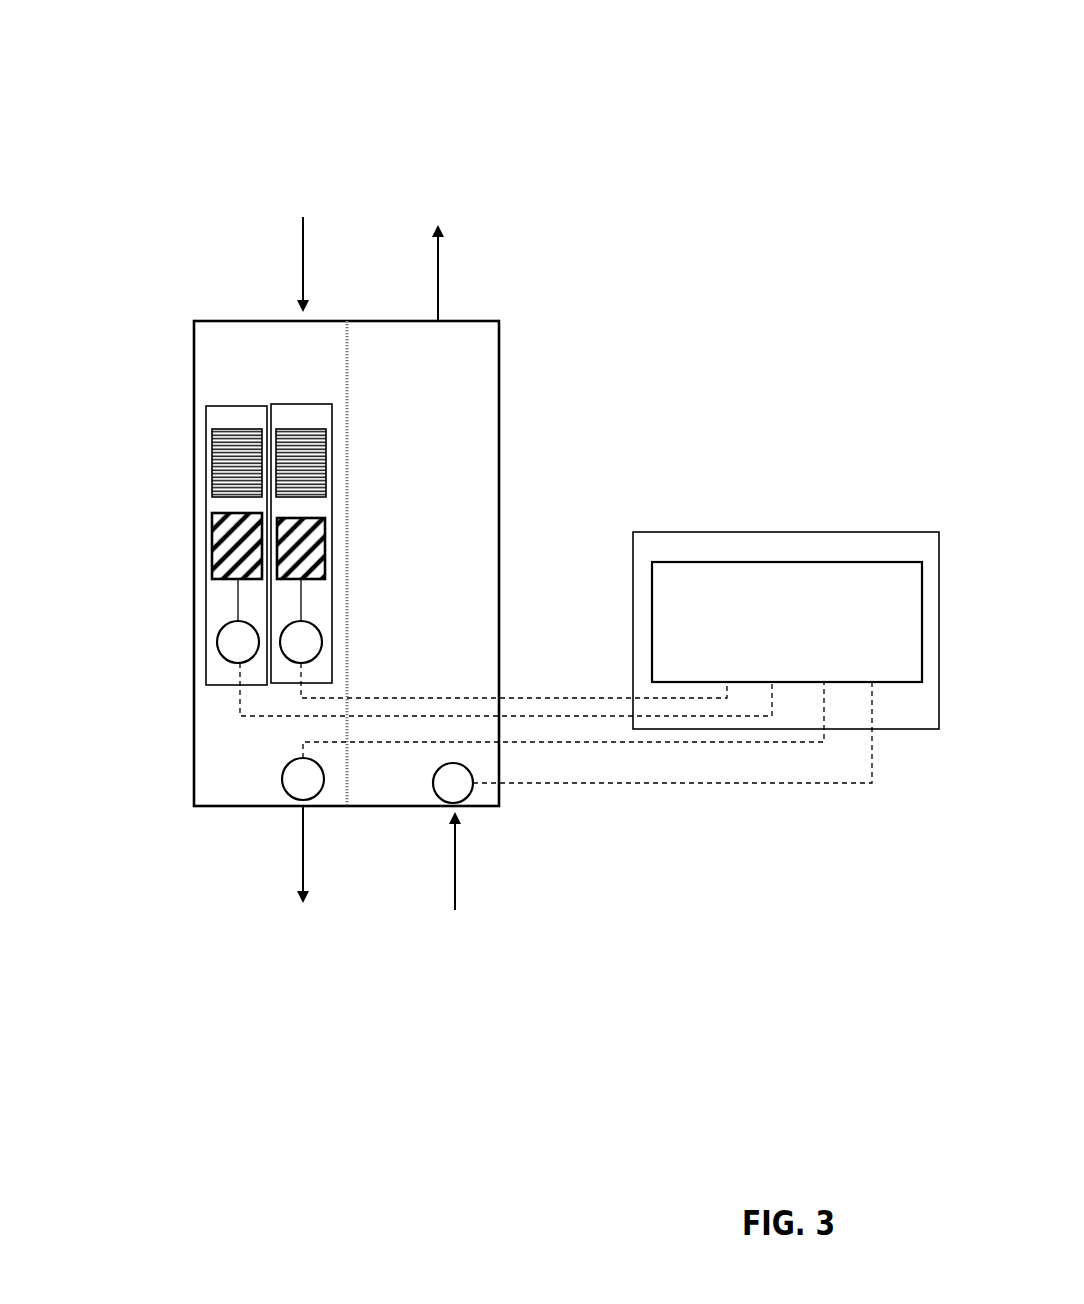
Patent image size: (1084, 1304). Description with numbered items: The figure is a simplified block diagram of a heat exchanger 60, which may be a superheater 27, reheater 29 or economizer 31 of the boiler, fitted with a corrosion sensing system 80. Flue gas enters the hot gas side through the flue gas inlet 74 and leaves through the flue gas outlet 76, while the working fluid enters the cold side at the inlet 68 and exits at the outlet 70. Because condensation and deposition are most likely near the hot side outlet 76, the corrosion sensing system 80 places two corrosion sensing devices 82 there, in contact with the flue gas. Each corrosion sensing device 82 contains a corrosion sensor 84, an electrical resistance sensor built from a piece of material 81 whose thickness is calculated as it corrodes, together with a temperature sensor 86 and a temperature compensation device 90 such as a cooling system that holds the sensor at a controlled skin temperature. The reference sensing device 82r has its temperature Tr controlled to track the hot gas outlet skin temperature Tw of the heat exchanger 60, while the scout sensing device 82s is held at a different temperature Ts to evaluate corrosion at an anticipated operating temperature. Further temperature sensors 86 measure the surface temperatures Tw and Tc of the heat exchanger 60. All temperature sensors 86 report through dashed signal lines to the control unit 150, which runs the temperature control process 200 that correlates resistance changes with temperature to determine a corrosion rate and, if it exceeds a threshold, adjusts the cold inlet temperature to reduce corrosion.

The heat exchanger 60 is at (619, 90).
The corrosion sensing system 80 is at (146, 238).
The piece of material 81 is at (384, 563).
The corrosion sensing device 82 is at (275, 517).
The scout corrosion sensing device 82s is at (207, 603).
The reference corrosion sensing device 82r is at (332, 415).
The temperature compensation device 90 is at (212, 460).
The corrosion sensor 84 is at (212, 571).
The temperature sensor 86 is at (226, 658).
The flue gas inlet 74 is at (303, 250).
The outlet 70 is at (440, 295).
The flue gas outlet 76 is at (303, 860).
The inlet 68 is at (458, 884).
The control unit 150 is at (786, 585).
The control process 200 is at (808, 672).
The superheater 27 is at (834, 186).
The reheater 29 is at (834, 186).
The economizer 31 is at (878, 145).